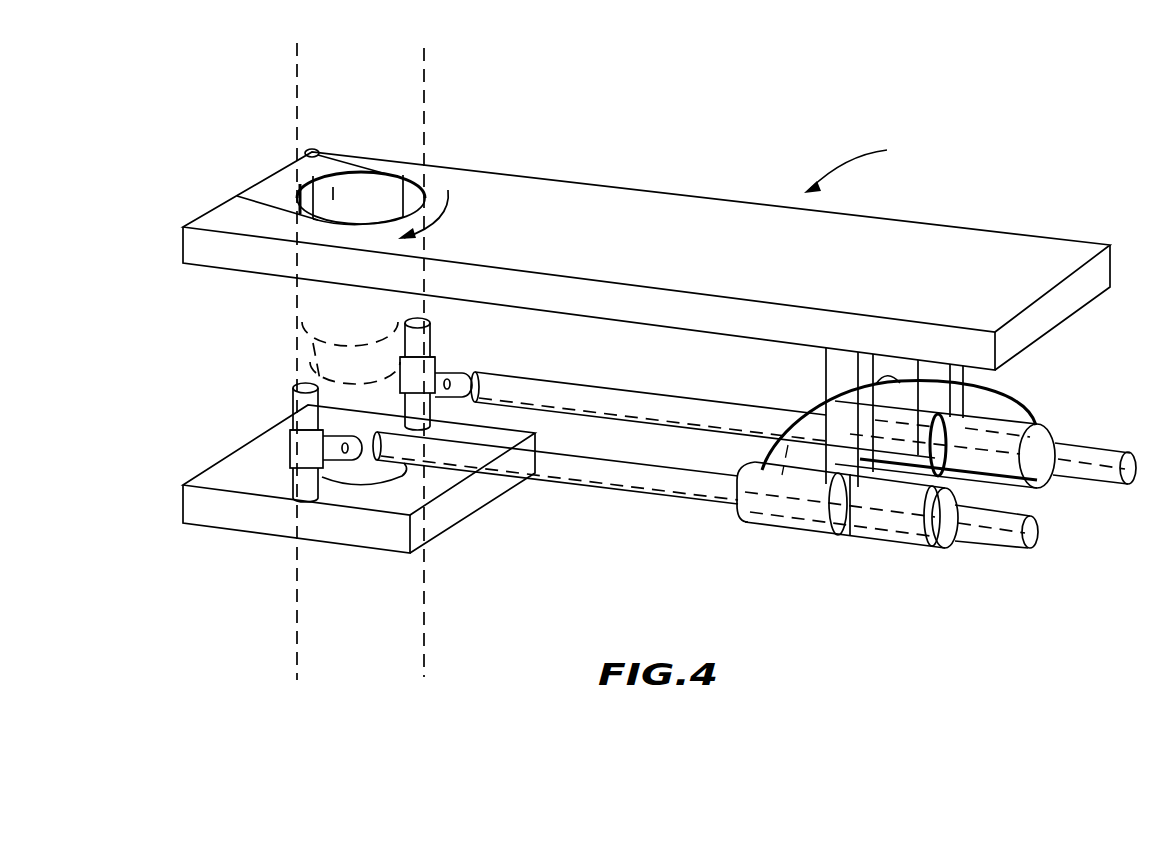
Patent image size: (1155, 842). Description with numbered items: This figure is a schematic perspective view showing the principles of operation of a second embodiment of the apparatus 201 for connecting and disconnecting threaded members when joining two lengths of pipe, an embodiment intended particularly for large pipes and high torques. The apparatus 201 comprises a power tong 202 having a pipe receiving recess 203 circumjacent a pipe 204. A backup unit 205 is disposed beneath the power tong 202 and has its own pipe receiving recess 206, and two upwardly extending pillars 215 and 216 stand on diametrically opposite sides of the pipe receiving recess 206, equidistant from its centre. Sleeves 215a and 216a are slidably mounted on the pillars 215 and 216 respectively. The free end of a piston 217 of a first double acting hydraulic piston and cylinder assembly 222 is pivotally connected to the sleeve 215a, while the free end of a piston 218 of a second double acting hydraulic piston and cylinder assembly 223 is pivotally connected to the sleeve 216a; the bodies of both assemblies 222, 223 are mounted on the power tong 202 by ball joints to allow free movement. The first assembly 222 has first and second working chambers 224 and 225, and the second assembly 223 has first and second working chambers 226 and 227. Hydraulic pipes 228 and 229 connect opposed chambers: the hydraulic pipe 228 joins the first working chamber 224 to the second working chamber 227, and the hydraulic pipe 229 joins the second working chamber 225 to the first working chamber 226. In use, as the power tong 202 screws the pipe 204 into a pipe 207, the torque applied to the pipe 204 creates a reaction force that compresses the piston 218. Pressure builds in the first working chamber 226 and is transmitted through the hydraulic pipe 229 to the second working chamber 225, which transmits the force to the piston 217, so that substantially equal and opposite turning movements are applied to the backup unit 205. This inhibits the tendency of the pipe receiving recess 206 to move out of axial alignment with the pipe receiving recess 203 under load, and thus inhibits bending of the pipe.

The apparatus 201 is at (870, 161).
The power tong 202 is at (653, 210).
The pipe receiving recess 203 is at (313, 187).
The pipe 204 is at (397, 107).
The backup unit 205 is at (240, 517).
The pipe receiving recess 206 is at (423, 507).
The pipe 207 is at (388, 619).
The pillar 215 is at (292, 422).
The sleeve 215a is at (289, 440).
The pillar 216 is at (428, 341).
The sleeve 216a is at (408, 378).
The piston 217 is at (630, 480).
The piston 218 is at (640, 402).
The first double acting hydraulic piston and cylinder assembly 222 is at (829, 540).
The second double acting hydraulic piston and cylinder assembly 223 is at (993, 485).
The first working chamber 224 is at (795, 524).
The second working chamber 225 is at (912, 537).
The first working chamber 226 is at (898, 365).
The second working chamber 227 is at (985, 420).
The hydraulic pipe 228 is at (787, 432).
The hydraulic pipe 229 is at (883, 372).